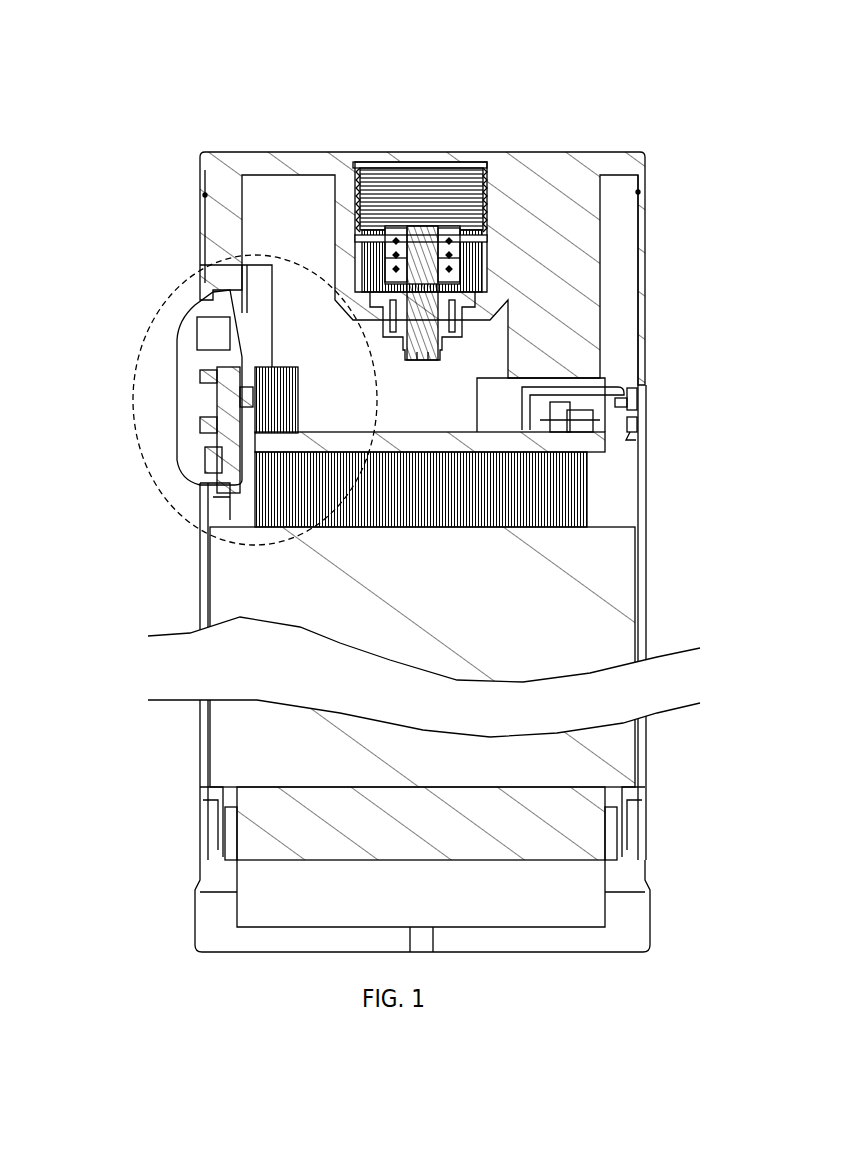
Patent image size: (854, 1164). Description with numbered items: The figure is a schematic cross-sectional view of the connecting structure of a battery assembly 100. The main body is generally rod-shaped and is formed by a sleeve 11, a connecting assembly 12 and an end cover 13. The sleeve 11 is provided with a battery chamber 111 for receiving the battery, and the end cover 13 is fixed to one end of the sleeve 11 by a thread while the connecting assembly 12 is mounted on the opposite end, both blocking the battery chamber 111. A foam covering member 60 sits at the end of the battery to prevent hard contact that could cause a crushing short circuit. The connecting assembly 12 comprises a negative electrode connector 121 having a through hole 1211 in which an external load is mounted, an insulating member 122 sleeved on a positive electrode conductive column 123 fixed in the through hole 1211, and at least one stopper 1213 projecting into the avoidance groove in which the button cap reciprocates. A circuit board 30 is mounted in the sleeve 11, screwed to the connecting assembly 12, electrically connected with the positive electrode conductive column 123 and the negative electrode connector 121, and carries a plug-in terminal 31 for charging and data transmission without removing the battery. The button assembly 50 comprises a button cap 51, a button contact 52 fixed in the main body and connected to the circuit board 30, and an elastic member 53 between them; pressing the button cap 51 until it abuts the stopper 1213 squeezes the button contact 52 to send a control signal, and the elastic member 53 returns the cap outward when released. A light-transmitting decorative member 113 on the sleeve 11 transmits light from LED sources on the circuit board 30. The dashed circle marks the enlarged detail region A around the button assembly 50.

The battery assembly 100 is at (476, 33).
The connecting assembly 12 is at (358, 66).
The negative electrode connector 121 is at (310, 152).
The insulating member 122 is at (355, 152).
The positive electrode conductive column 123 is at (415, 182).
The through hole 1211 is at (458, 182).
The stopper 1213 is at (208, 293).
The light-transmitting decorative member 113 is at (197, 297).
The sleeve 11 is at (206, 770).
The battery chamber 111 is at (582, 636).
The circuit board 30 is at (478, 440).
The plug-in terminal 31 is at (640, 410).
The button assembly 50 is at (63, 322).
The button cap 51 is at (176, 350).
The button contact 52 is at (178, 395).
The elastic member 53 is at (185, 462).
The covering member 60 is at (330, 815).
The end cover 13 is at (226, 915).
The detail region A is at (170, 492).